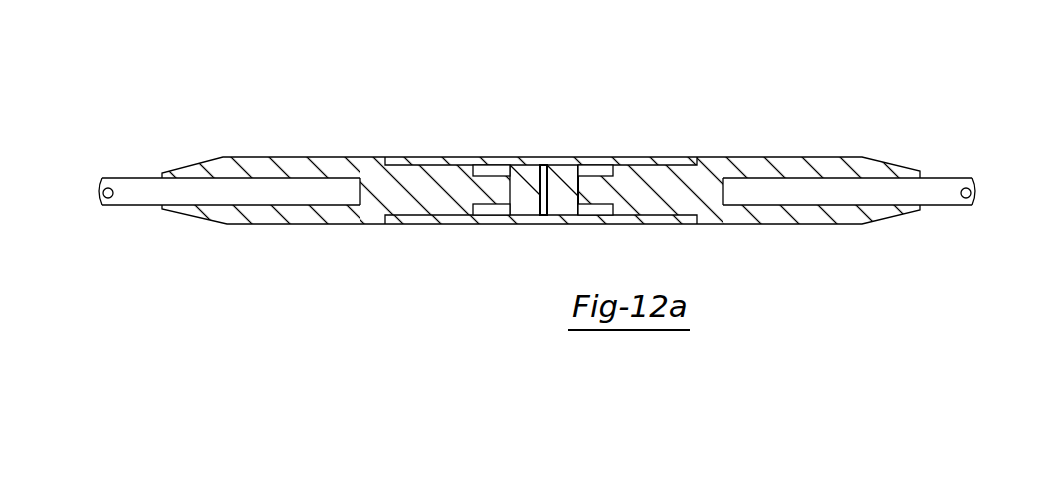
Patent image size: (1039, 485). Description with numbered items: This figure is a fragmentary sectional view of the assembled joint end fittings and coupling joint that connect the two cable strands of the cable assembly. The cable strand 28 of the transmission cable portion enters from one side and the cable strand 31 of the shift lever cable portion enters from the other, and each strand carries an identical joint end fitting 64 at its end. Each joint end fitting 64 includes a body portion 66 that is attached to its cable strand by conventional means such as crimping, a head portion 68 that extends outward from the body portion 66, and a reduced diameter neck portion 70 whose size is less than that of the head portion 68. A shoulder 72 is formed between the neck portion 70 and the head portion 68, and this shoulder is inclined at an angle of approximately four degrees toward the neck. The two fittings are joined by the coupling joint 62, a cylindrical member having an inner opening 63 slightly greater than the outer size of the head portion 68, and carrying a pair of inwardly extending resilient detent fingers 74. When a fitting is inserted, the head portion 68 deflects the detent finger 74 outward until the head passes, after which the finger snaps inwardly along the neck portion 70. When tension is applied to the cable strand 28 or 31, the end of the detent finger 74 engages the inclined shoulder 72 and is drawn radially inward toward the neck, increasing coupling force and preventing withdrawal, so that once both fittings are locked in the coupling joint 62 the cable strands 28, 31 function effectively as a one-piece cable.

The cable strand 28 is at (154, 193).
The cable strand 31 is at (945, 187).
The coupling joint 62 is at (556, 215).
The inner diameter or opening 63 is at (400, 205).
The joint end fitting 64 is at (343, 157).
The body portion 66 is at (250, 167).
The head portion 68 is at (544, 163).
The neck portion 70 is at (600, 190).
The shoulder 72 is at (497, 213).
The detent finger 74 is at (488, 170).